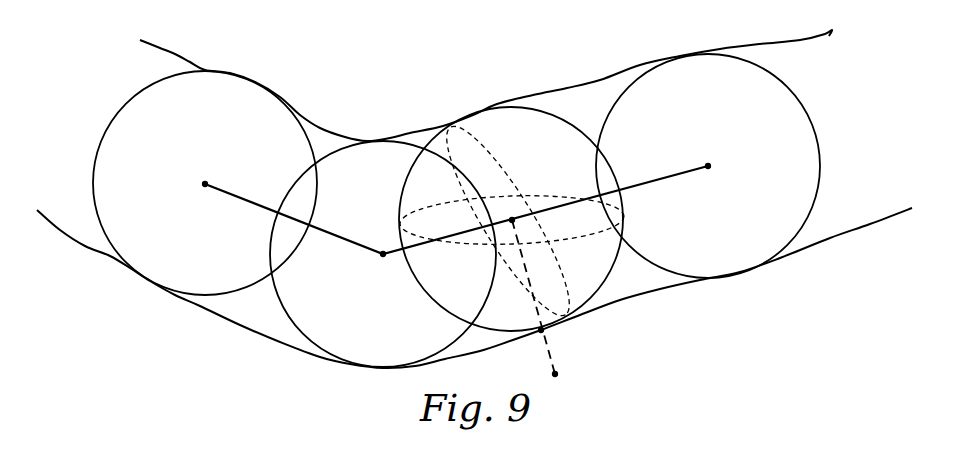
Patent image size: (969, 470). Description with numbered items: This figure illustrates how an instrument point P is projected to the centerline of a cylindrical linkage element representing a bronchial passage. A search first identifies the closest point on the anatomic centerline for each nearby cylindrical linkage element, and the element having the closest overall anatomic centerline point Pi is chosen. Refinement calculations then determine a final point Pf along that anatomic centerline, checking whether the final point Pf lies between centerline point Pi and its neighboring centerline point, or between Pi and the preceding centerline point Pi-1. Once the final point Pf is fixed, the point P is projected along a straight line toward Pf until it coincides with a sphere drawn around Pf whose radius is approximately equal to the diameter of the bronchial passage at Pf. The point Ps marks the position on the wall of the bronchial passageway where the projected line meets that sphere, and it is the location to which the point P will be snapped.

The centerline point Pi-1 is at (205, 183).
The closest anatomic centerline point Pi is at (383, 254).
The final point Pf is at (512, 219).
The position on the wall of the bronchial passageway Ps is at (524, 315).
The instrument point P is at (543, 305).